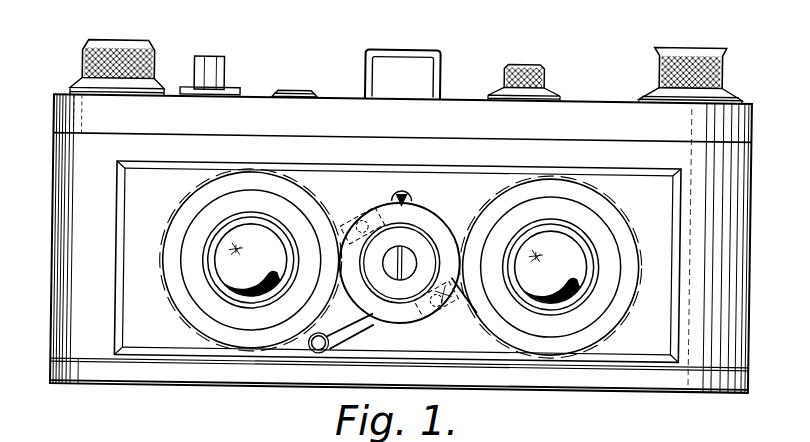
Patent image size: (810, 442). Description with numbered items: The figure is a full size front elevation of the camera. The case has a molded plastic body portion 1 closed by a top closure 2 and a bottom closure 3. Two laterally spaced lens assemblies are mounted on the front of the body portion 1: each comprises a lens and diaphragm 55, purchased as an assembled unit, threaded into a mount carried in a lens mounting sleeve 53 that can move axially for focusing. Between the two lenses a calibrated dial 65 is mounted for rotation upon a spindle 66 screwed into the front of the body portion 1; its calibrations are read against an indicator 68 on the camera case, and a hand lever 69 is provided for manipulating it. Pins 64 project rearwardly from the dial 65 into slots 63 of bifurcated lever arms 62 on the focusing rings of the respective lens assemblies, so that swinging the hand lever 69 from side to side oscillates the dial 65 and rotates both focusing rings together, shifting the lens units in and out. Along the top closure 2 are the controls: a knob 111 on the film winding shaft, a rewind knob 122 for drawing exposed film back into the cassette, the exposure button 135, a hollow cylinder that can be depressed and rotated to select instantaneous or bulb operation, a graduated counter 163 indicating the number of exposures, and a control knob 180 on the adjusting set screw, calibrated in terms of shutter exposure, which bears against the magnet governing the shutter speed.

The body portion 1 is at (82, 223).
The top closure 2 is at (68, 125).
The bottom closure 3 is at (66, 371).
The knob 111 is at (80, 58).
The exposure button 135 is at (208, 70).
The counter 163 is at (292, 93).
The control knob 180 is at (525, 68).
The knob 122 is at (708, 67).
The lens mounting sleeve 53 is at (192, 321).
The lens and diaphragm 55 is at (213, 293).
The bifurcated lever arm 62 is at (347, 228).
The slot 63 is at (349, 226).
The pin 64 is at (382, 200).
The calibrated dial 65 is at (434, 218).
The spindle 66 is at (405, 272).
The indicator 68 is at (401, 200).
The hand lever 69 is at (337, 351).